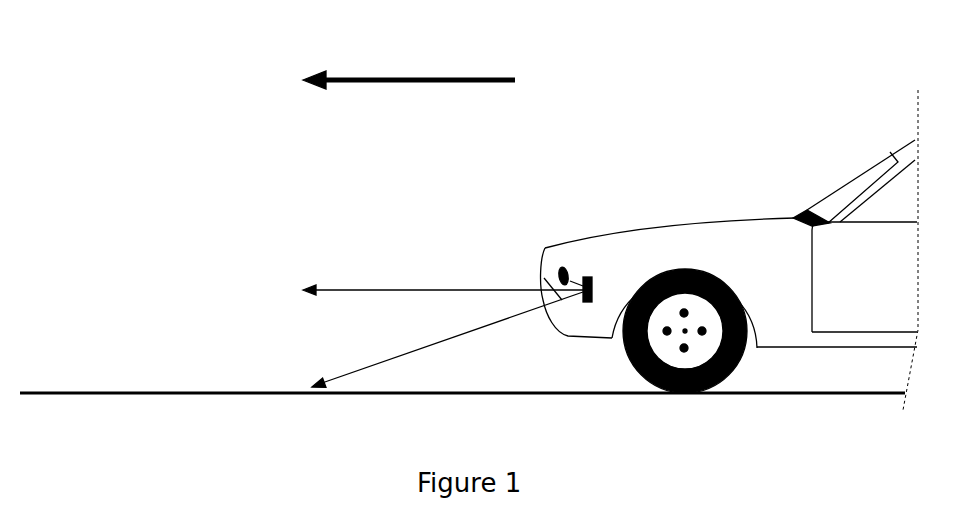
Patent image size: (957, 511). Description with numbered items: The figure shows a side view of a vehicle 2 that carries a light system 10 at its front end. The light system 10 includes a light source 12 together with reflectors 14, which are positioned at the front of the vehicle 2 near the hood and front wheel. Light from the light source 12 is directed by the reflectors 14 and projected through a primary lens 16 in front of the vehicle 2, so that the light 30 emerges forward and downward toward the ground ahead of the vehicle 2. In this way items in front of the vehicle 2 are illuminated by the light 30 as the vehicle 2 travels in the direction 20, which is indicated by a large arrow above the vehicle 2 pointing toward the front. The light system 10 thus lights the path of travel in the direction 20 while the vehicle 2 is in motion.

The vehicle 2 is at (645, 228).
The light system 10 is at (492, 191).
The light source 12 is at (548, 257).
The reflectors 14 is at (591, 302).
The primary lens 16 is at (537, 277).
The direction 20 is at (463, 77).
The light 30 is at (403, 355).